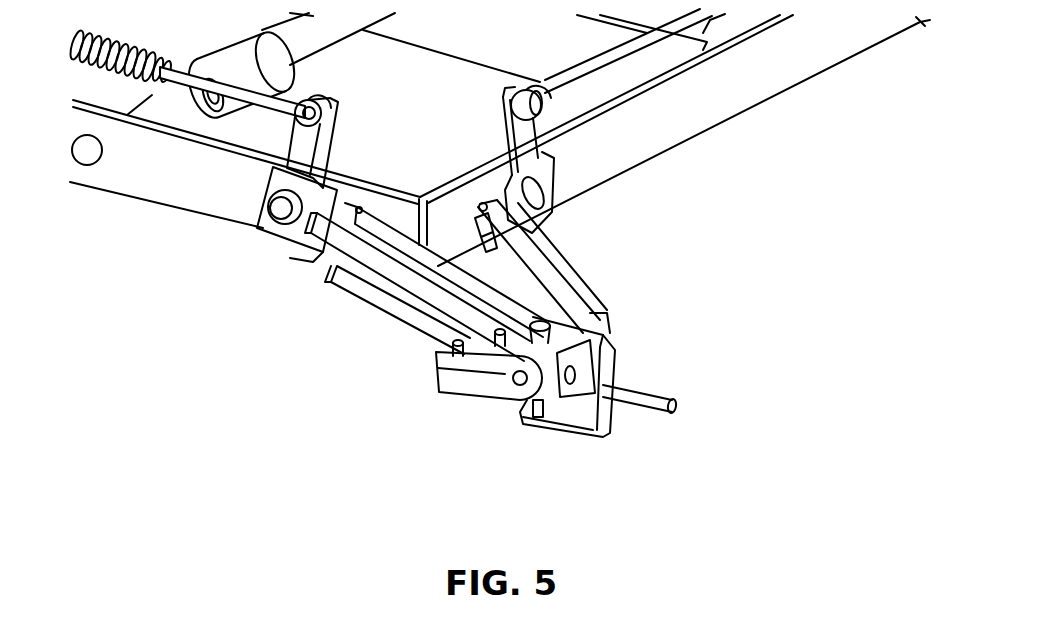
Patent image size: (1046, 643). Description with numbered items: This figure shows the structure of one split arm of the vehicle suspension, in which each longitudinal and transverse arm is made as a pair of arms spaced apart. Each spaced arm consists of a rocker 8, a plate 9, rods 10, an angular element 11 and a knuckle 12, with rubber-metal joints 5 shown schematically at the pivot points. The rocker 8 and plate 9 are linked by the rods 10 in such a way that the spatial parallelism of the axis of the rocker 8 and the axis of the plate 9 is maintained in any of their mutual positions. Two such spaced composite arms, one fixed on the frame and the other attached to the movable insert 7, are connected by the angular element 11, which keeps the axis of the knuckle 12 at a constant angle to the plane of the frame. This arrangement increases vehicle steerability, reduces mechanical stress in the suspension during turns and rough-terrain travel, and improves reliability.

The rubber-metal joint 5 is at (277, 220).
The movable insert 7 is at (200, 197).
The rocker 8 is at (508, 176).
The plate 9 is at (535, 403).
The rods 10 is at (293, 378).
The angular element 11 is at (538, 356).
The knuckle 12 is at (607, 343).